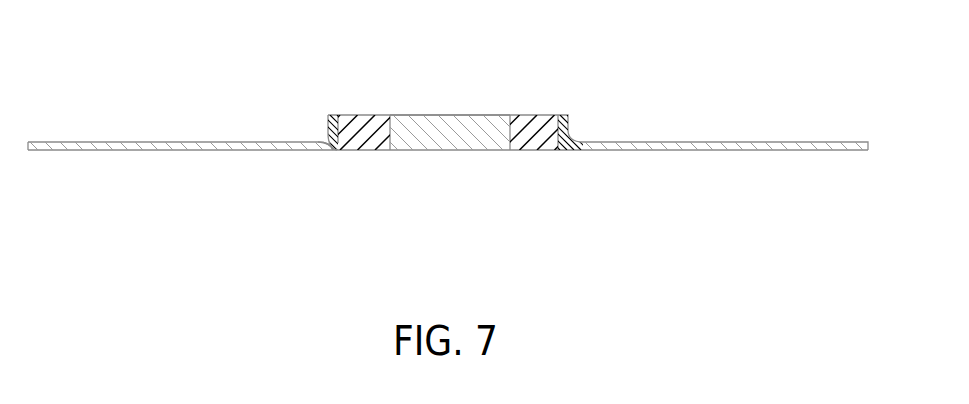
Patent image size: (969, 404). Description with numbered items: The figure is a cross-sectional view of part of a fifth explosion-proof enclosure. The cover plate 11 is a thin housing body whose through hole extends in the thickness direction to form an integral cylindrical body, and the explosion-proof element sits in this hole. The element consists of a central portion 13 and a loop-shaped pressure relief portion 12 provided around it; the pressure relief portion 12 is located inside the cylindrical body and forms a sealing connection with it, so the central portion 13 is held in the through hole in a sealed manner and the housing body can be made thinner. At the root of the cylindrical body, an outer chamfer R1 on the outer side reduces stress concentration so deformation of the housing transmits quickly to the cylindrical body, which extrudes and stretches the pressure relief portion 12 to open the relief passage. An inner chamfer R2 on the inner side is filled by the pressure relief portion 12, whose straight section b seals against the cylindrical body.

The cover plate 11 is at (125, 142).
The pressure relief portion 12 is at (362, 120).
The central portion 13 is at (460, 120).
The outer chamfer R1 is at (325, 135).
The inner chamfer R2 is at (333, 150).
The straight section b is at (568, 115).